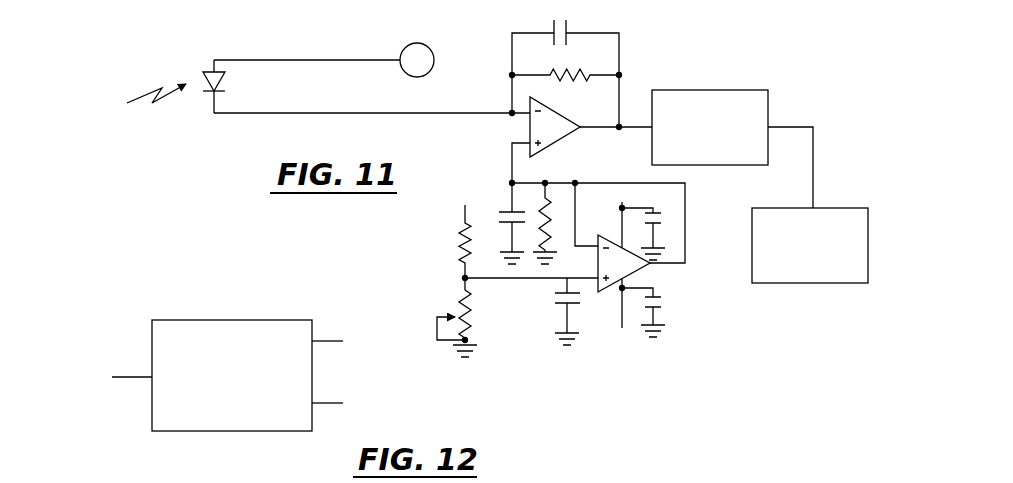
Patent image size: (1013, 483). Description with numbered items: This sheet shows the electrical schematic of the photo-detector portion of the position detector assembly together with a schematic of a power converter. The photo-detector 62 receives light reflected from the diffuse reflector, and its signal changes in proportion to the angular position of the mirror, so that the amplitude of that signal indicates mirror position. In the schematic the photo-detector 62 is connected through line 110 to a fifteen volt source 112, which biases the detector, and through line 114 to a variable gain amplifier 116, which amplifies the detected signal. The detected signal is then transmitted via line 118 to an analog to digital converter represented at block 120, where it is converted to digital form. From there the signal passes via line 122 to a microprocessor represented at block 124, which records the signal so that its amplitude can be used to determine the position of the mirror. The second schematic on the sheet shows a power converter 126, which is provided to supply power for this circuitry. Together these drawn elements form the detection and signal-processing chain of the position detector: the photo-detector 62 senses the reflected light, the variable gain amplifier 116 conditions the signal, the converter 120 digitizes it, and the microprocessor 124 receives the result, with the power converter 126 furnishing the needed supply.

In FIG. 11, the photo-detector 62 is at (205, 68).
In FIG. 11, the line 110 is at (345, 59).
In FIG. 11, the 15 Volt source 112 is at (417, 43).
In FIG. 11, the line 114 is at (278, 113).
In FIG. 11, the variable gain amplifier 116 is at (415, 263).
In FIG. 11, the line 118 is at (637, 127).
In FIG. 11, the analog to digital converter 120 is at (740, 90).
In FIG. 11, the line 122 is at (815, 140).
In FIG. 11, the microprocessor 124 is at (798, 283).
In FIG. 12, the power converter 126 is at (191, 309).